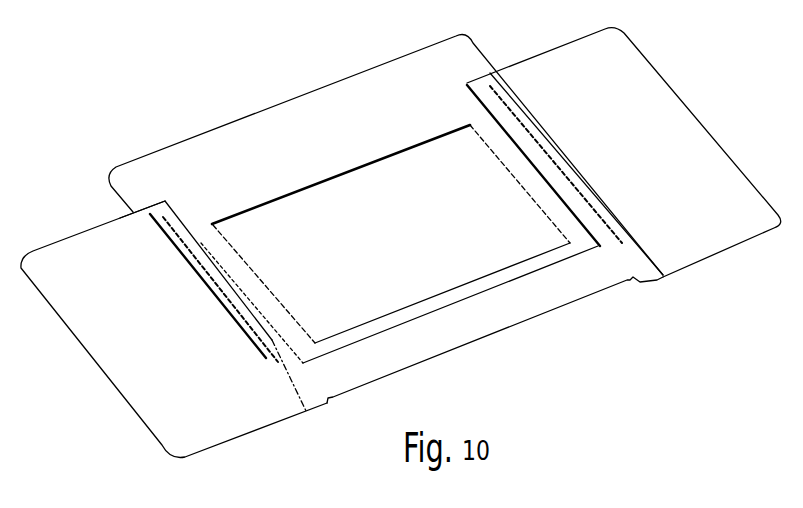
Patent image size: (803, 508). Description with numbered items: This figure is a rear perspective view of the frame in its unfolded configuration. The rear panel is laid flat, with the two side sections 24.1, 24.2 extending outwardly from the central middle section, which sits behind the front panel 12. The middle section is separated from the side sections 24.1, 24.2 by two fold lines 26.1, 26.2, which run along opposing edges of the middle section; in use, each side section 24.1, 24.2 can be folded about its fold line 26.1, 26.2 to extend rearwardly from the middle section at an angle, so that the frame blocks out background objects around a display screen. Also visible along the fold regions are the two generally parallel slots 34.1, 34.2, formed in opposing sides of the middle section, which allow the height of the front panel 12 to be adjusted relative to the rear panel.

The front panel 12 is at (437, 71).
The side section 24.1 is at (714, 234).
The side section 24.2 is at (208, 418).
The fold line 26.1 is at (532, 112).
The fold line 26.2 is at (176, 266).
The slot 34.1 is at (603, 228).
The slot 34.2 is at (266, 357).